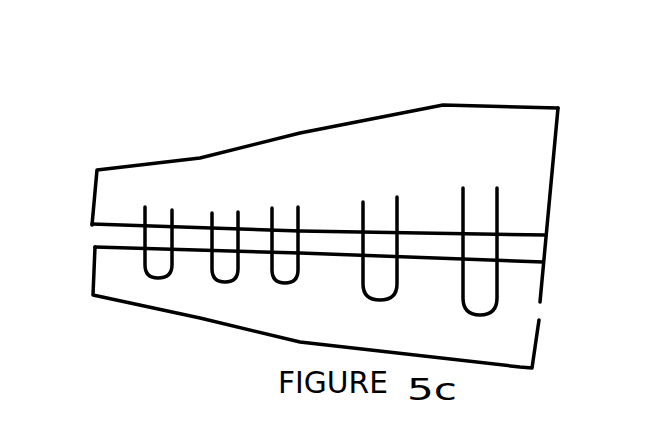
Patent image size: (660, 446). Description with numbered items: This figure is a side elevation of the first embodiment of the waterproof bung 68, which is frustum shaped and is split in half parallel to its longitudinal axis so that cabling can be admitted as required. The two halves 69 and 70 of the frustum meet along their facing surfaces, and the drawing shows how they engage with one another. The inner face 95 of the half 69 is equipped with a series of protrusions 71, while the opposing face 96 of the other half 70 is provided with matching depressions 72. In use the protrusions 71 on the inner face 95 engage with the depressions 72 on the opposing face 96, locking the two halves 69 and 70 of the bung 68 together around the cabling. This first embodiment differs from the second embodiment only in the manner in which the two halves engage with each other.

The waterproof bung 68 is at (345, 199).
The half of the frustum 69 is at (532, 167).
The other half of the bung 70 is at (517, 352).
The protrusions 71 is at (482, 220).
The depressions 72 is at (147, 277).
The inner face 95 is at (543, 238).
The opposing face 96 is at (547, 267).